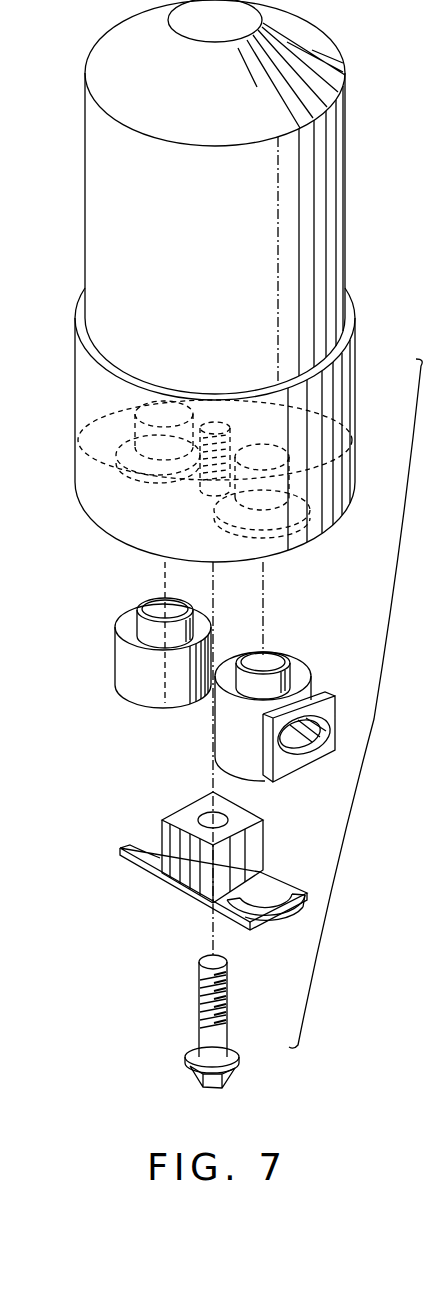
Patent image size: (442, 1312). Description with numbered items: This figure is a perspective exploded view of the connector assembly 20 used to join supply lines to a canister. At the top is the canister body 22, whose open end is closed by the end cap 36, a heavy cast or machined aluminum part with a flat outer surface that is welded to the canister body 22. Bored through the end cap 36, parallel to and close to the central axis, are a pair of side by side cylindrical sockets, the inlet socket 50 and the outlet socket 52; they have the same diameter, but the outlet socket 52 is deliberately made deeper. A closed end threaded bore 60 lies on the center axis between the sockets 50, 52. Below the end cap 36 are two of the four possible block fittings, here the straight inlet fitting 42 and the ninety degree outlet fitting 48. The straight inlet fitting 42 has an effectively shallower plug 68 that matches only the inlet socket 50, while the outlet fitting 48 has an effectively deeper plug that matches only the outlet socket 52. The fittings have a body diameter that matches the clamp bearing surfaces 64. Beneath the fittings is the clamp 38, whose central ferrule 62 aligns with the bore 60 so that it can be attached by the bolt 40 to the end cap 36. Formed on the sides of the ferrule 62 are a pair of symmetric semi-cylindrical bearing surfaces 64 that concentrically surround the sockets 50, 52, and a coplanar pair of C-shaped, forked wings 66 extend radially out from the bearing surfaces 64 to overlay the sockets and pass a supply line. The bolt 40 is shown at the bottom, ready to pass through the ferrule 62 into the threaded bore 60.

The connector assembly 20 is at (381, 724).
The canister body 22 is at (330, 223).
The end cap 36 is at (352, 366).
The clamp 38 is at (196, 914).
The bolt 40 is at (225, 1027).
The straight inlet fitting 42 is at (130, 643).
The ninety degree outlet fitting 48 is at (291, 680).
The inlet socket 50 is at (140, 419).
The outlet socket 52 is at (297, 468).
The threaded bore 60 is at (340, 412).
The ferrule 62 is at (217, 825).
The bearing surfaces 64 is at (190, 813).
The wings 66 is at (128, 853).
The plug 68 is at (140, 627).